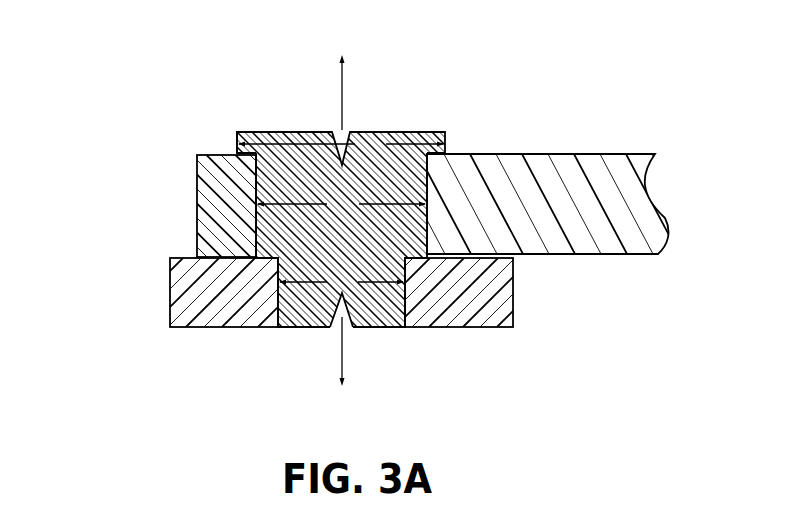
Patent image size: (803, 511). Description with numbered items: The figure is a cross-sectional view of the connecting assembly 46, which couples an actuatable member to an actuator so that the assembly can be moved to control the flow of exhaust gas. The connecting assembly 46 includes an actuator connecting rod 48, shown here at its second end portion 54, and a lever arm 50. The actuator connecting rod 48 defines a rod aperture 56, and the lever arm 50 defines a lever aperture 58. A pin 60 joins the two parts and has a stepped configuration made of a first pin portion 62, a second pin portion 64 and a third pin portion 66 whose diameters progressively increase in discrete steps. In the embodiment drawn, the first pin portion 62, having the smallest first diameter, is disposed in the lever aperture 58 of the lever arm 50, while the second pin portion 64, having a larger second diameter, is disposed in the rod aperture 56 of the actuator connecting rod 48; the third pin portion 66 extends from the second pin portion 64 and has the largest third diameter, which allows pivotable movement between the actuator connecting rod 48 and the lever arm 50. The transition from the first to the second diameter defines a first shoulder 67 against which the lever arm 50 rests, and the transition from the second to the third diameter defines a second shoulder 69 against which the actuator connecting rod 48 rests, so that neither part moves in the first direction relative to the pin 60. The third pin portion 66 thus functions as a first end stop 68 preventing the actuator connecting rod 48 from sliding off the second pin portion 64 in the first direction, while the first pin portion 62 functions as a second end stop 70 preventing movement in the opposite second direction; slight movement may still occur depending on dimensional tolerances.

The connecting assembly 46 is at (100, 90).
The actuator connecting rod 48 is at (580, 172).
The lever arm 50 is at (488, 289).
The second end portion 54 is at (524, 180).
The rod aperture 56 is at (413, 170).
The lever aperture 58 is at (390, 320).
The pin 60 is at (293, 132).
The first pin portion 62 is at (220, 315).
The second pin portion 64 is at (277, 219).
The third pin portion 66 is at (247, 116).
The first shoulder 67 is at (412, 258).
The first end stop 68 is at (252, 132).
The second shoulder 69 is at (430, 160).
The second end stop 70 is at (296, 310).